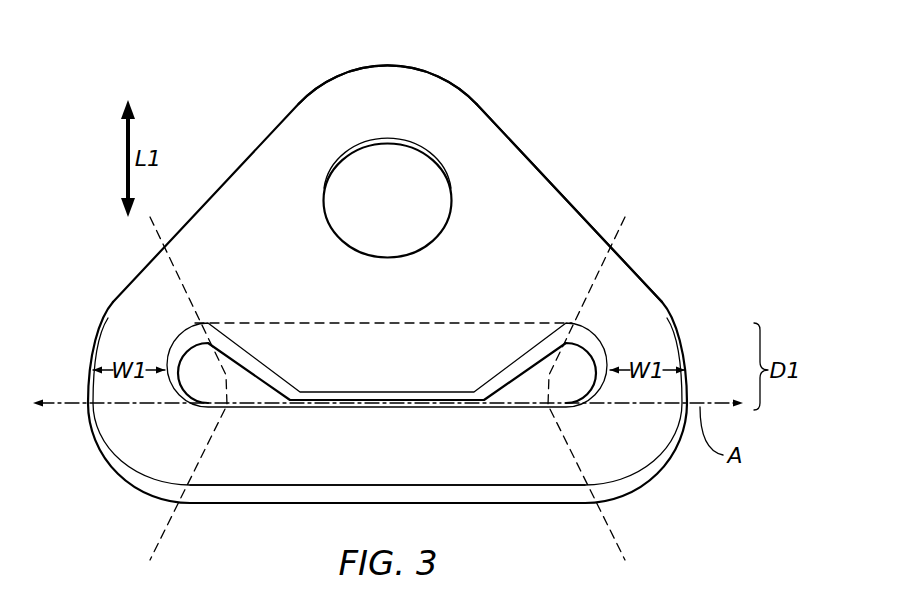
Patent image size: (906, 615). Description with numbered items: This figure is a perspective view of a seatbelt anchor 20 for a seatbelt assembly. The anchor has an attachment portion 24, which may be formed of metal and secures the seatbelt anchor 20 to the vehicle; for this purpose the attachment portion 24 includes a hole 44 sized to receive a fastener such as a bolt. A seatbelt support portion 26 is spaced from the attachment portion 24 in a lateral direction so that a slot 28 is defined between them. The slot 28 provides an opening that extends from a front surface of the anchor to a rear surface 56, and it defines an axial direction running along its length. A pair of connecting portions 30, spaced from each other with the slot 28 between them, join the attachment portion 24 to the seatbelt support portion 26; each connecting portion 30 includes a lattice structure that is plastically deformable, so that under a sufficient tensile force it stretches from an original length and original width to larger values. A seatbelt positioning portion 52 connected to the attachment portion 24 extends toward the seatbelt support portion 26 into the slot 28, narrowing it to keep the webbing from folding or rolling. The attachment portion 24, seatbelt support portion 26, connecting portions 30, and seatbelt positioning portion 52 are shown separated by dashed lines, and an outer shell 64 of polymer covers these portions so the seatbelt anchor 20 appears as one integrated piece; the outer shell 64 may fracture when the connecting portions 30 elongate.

The seatbelt anchor 20 is at (640, 98).
The attachment portion 24 is at (487, 145).
The seatbelt support portion 26 is at (293, 467).
The slot 28 is at (238, 393).
The connecting portions 30 is at (132, 347).
The hole 44 is at (348, 190).
The seatbelt positioning portion 52 is at (470, 370).
The rear surface 56 is at (338, 102).
The outer shell 64 is at (377, 305).